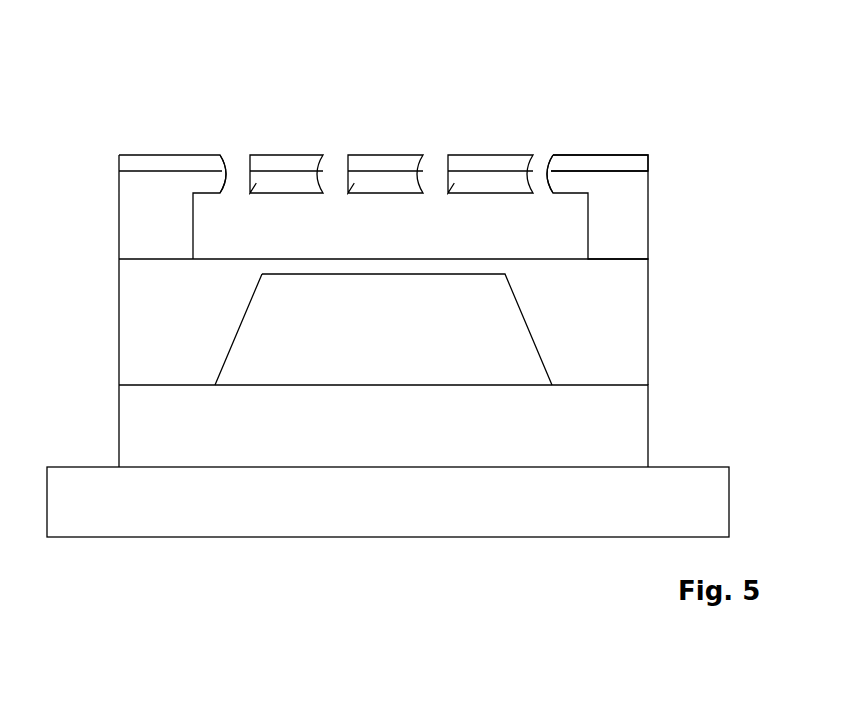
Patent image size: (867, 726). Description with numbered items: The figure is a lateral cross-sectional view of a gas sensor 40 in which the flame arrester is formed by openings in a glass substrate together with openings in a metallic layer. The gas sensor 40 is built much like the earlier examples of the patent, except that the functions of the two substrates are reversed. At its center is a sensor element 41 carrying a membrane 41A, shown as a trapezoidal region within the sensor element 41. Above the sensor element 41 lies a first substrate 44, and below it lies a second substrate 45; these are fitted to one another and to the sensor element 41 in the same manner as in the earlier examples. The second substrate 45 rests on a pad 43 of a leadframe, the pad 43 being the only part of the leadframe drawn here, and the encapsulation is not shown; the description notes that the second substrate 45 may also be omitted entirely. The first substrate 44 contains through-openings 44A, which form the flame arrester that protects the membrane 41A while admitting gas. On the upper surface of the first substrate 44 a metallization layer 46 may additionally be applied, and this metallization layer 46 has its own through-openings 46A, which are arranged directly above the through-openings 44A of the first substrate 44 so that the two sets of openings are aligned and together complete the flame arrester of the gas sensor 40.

The gas sensor 40 is at (623, 47).
The sensor element 41 is at (433, 226).
The membrane 41A is at (385, 262).
The pad 43 is at (102, 480).
The first substrate 44 is at (145, 218).
The through-openings 44A is at (235, 170).
The second substrate 45 is at (635, 423).
The metallization layer 46 is at (607, 162).
The through-openings 46A is at (562, 167).